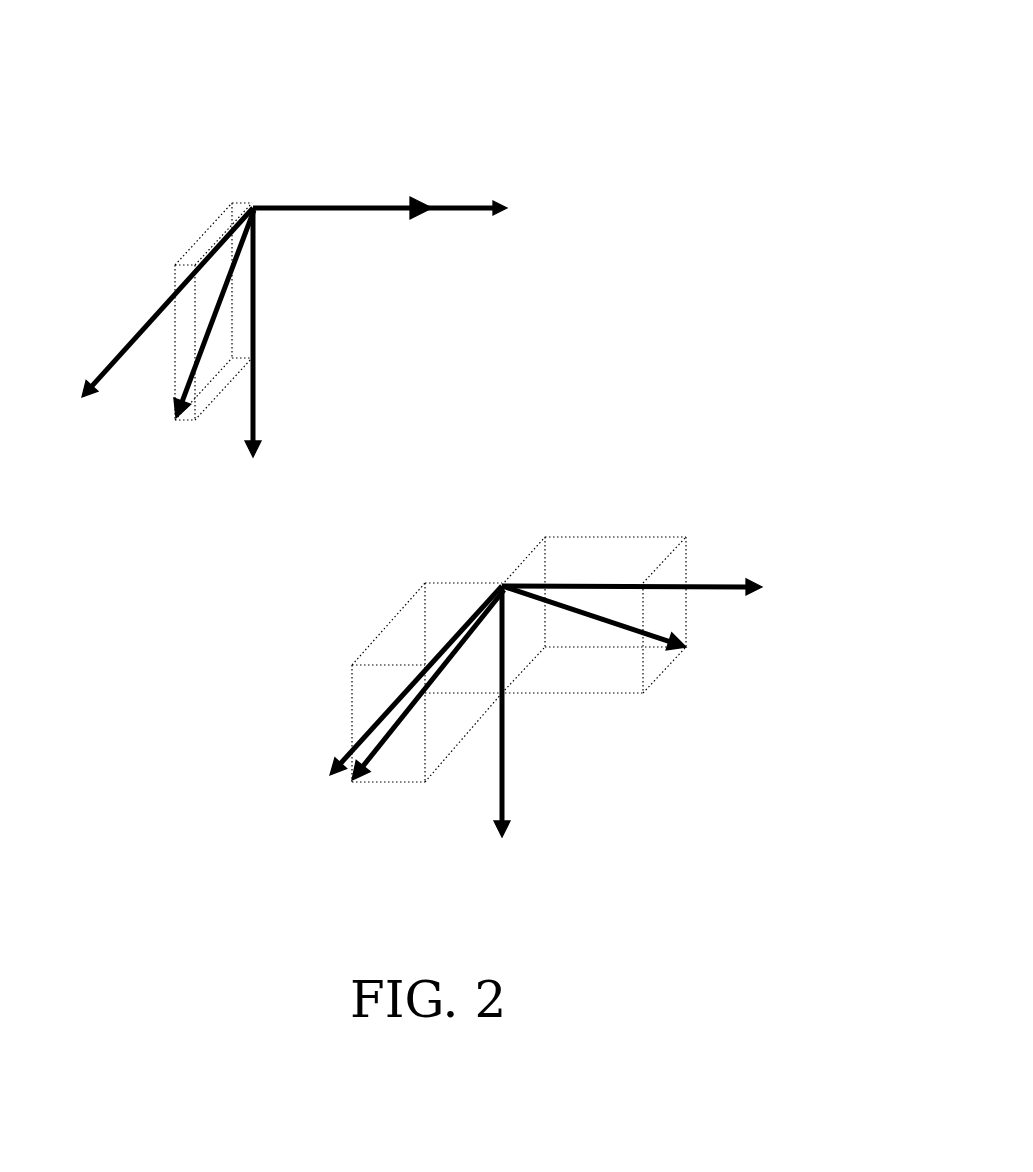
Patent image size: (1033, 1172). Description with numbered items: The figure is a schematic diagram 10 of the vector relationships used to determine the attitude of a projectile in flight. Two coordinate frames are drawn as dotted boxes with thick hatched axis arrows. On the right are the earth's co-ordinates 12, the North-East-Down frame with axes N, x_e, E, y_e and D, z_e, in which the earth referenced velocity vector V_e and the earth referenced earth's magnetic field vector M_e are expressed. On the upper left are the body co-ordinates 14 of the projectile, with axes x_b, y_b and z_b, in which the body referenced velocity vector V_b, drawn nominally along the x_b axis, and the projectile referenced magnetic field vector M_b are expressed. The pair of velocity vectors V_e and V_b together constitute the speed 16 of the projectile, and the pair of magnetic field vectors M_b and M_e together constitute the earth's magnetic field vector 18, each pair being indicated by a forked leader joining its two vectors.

The schematic diagram 10 is at (606, 100).
The earth's co-ordinates 12 is at (724, 551).
The body co-ordinates 14 is at (460, 184).
The speed 16 is at (606, 604).
The earth's magnetic field vector 18 is at (209, 373).